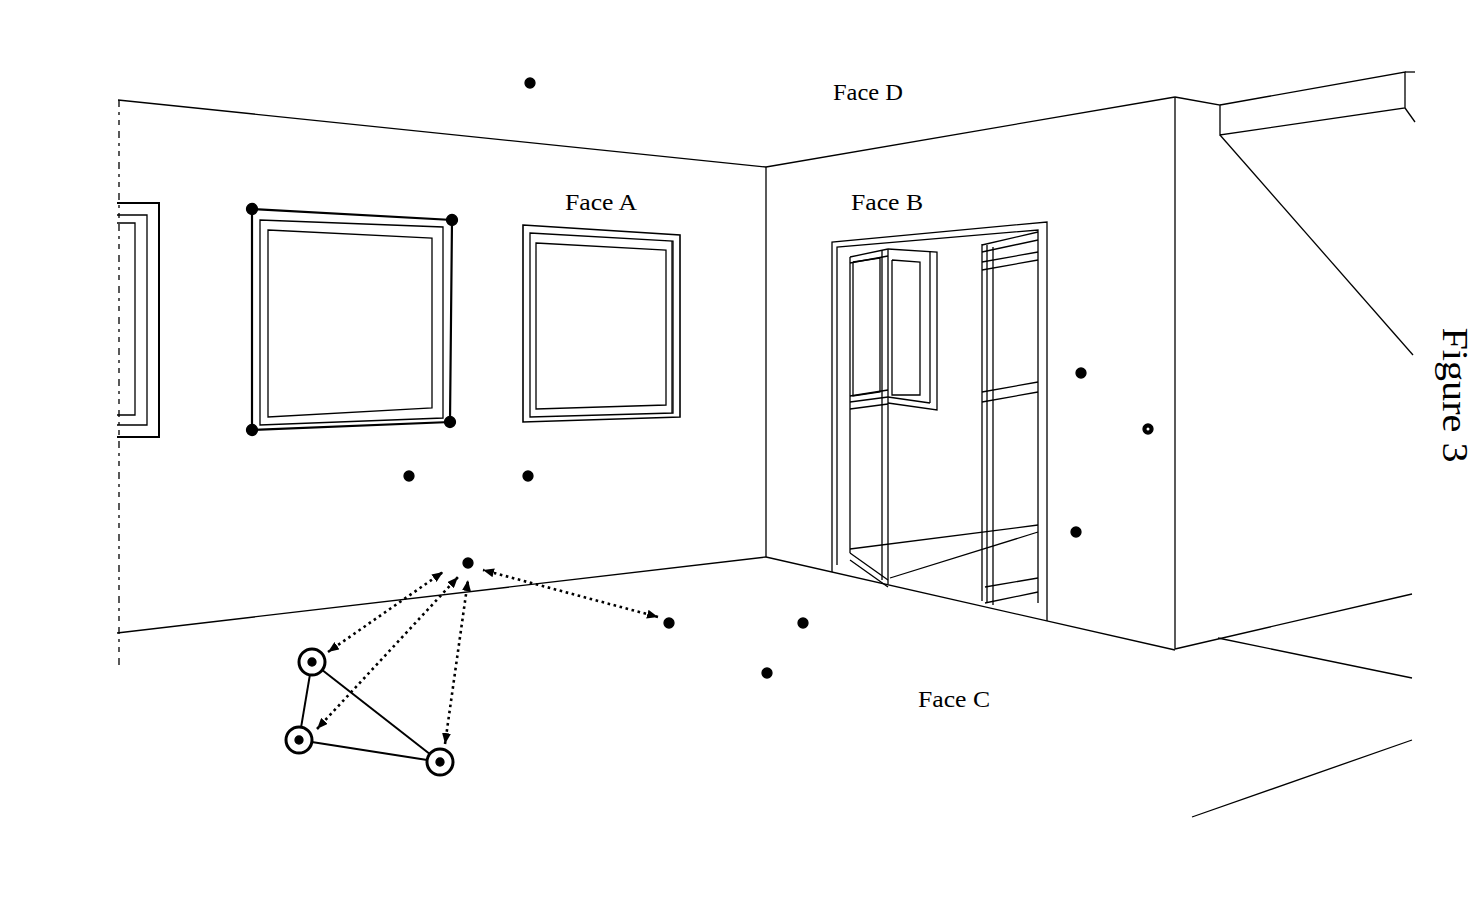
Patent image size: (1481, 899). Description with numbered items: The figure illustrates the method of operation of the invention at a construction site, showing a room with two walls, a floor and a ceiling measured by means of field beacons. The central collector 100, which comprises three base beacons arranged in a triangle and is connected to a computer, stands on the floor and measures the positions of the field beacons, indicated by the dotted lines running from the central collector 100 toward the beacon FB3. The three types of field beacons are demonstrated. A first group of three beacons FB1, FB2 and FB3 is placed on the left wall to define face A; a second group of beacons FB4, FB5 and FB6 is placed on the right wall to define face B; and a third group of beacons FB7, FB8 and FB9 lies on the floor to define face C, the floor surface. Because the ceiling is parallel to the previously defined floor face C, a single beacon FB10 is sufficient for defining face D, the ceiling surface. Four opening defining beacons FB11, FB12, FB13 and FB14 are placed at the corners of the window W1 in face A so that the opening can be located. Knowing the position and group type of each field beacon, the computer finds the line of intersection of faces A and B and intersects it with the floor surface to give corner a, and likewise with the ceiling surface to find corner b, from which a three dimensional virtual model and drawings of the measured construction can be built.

The field beacon FB1 is at (408, 459).
The field beacon FB2 is at (535, 459).
The field beacon FB3 is at (472, 548).
The field beacon FB4 is at (1088, 358).
The field beacon FB5 is at (1148, 415).
The field beacon FB6 is at (1082, 517).
The field beacon FB7 is at (674, 606).
The field beacon FB8 is at (807, 607).
The field beacon FB9 is at (772, 657).
The field beacon FB10 is at (542, 68).
The opening defining beacon FB11 is at (254, 193).
The opening defining beacon FB12 is at (455, 205).
The opening defining beacon FB13 is at (478, 407).
The opening defining beacon FB14 is at (281, 413).
The central collector 100 is at (369, 712).
The window W1 is at (352, 319).
The corner a is at (758, 541).
The corner b is at (759, 184).